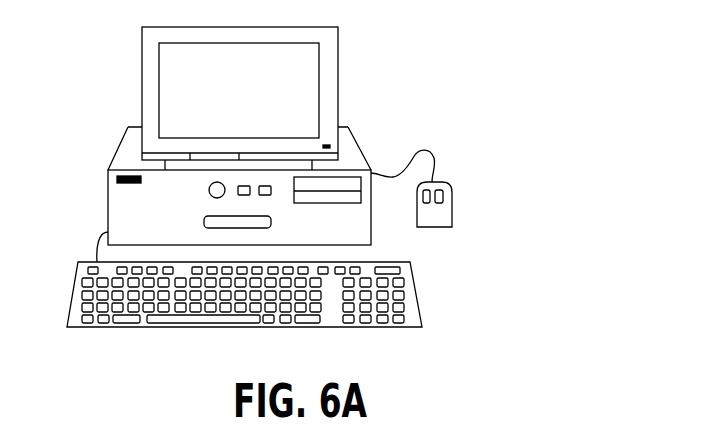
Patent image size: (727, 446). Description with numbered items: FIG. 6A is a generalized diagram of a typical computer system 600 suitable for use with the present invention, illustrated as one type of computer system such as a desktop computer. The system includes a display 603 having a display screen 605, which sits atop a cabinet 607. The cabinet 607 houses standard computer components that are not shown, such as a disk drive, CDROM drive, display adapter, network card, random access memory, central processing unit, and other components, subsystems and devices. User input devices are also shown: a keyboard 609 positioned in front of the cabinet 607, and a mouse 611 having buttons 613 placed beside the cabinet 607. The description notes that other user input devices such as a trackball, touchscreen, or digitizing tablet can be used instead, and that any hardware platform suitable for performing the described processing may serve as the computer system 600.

The computer system 600 is at (534, 71).
The display 603 is at (291, 93).
The display screen 605 is at (313, 59).
The cabinet 607 is at (350, 145).
The keyboard 609 is at (140, 328).
The mouse 611 is at (456, 199).
The buttons 613 is at (441, 193).